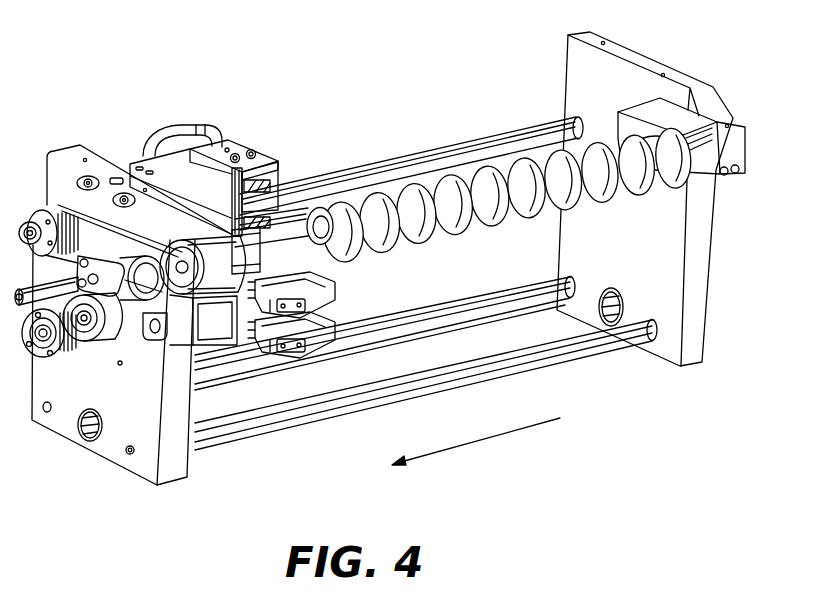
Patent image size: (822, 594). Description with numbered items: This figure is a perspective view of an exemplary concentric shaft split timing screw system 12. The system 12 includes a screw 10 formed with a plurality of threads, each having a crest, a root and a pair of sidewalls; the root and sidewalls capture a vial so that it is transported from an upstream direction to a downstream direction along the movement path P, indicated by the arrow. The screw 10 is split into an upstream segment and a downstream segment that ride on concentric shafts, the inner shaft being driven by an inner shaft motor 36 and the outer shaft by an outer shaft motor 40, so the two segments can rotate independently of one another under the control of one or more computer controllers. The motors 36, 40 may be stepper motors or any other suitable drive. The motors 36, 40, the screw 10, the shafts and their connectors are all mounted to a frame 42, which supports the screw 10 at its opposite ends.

The screw 10 is at (403, 200).
The concentric shaft split timing screw system 12 is at (380, 291).
The inner shaft motor 36 is at (208, 318).
The outer shaft motor 40 is at (214, 200).
The frame 42 is at (700, 295).
The movement path P is at (505, 433).